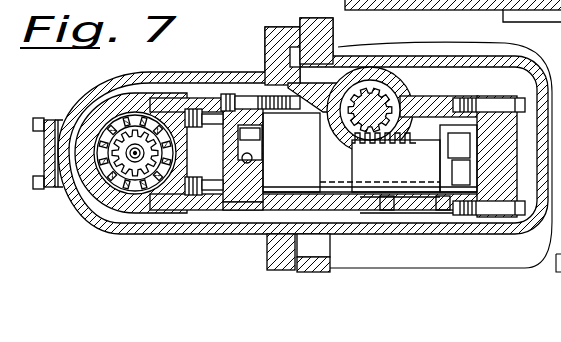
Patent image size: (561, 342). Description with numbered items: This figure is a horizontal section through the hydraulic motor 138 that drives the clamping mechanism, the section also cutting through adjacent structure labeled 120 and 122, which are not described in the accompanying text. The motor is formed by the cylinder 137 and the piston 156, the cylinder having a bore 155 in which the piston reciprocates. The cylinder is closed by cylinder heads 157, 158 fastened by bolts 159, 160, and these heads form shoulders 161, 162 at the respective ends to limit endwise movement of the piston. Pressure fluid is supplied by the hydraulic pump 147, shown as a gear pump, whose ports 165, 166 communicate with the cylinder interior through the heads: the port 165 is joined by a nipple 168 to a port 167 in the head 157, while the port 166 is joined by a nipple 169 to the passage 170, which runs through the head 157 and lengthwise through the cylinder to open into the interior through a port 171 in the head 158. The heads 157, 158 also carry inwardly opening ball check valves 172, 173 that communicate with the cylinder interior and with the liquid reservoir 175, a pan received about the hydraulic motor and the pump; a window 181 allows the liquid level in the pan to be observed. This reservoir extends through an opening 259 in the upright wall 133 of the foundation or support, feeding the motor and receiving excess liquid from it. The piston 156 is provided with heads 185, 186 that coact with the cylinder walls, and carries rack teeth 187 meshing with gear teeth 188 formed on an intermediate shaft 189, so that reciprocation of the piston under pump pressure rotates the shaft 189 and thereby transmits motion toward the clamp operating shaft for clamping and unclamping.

The housing 120 is at (94, 81).
The boss 122 is at (323, 31).
The upright wall 133 is at (268, 262).
The cylinder 137 is at (393, 222).
The hydraulic motor 138 is at (446, 80).
The hydraulic pump 147 is at (112, 206).
The bore 155 is at (442, 222).
The piston 156 is at (388, 225).
The cylinder head 157 is at (236, 94).
The cylinder head 158 is at (522, 262).
The bolt 159 is at (237, 220).
The bolt 160 is at (484, 232).
The shoulder 161 is at (256, 181).
The shoulder 162 is at (487, 128).
The port 165 is at (172, 110).
The port 166 is at (168, 198).
The port 167 is at (250, 134).
The nipple 168 is at (208, 113).
The nipple 169 is at (206, 213).
The passage 170 is at (329, 206).
The port 171 is at (493, 180).
The check valve 172 is at (249, 157).
The check valve 173 is at (478, 117).
The liquid reservoir 175 is at (497, 224).
The window 181 is at (36, 119).
The piston head 185 is at (336, 167).
The piston head 186 is at (453, 162).
The rack teeth 187 is at (410, 135).
The gear teeth 188 is at (397, 96).
The intermediate shaft 189 is at (374, 96).
The opening 259 is at (277, 50).